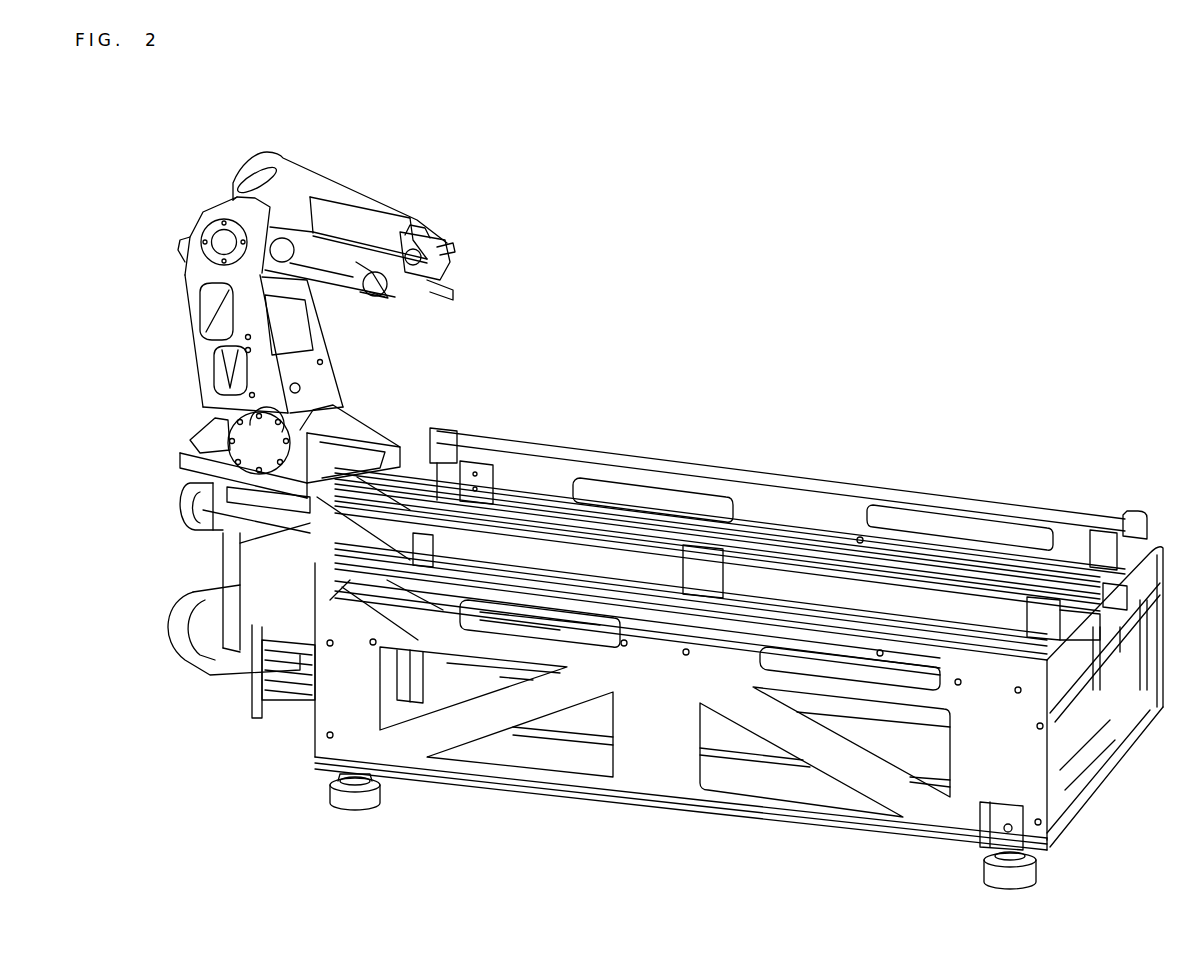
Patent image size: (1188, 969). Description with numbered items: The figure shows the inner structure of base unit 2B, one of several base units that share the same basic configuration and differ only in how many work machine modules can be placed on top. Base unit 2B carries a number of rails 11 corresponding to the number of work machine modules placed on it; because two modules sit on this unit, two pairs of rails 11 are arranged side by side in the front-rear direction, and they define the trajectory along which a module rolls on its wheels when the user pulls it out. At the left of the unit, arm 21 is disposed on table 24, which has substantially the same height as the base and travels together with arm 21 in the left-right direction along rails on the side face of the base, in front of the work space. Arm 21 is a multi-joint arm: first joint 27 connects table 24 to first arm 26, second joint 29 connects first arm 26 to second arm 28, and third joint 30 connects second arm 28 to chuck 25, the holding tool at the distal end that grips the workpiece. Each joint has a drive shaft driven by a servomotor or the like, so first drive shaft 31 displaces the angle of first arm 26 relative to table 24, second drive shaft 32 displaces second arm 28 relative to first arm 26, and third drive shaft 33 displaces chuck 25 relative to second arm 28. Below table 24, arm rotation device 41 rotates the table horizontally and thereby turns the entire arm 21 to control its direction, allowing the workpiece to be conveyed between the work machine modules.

The rails 11 is at (888, 545).
The arm 21 is at (350, 155).
The table 24 is at (182, 455).
The chuck 25 is at (440, 246).
The first arm 26 is at (203, 342).
The first joint 27 is at (228, 413).
The second arm 28 is at (286, 238).
The second joint 29 is at (205, 218).
The third joint 30 is at (385, 282).
The first drive shaft 31 is at (307, 423).
The second drive shaft 32 is at (220, 248).
The third drive shaft 33 is at (407, 292).
The arm rotation device 41 is at (187, 513).
The base unit 2B is at (920, 810).